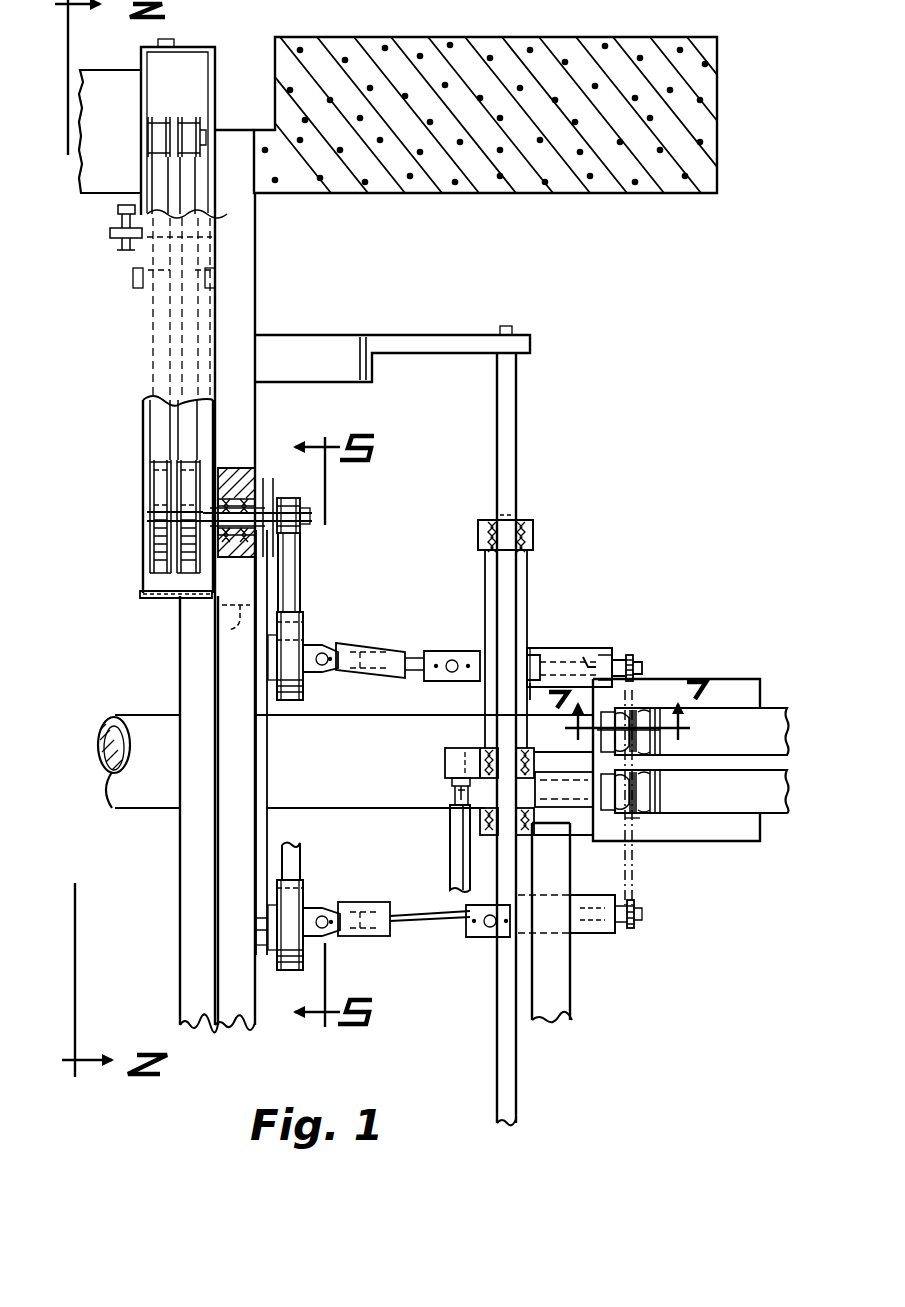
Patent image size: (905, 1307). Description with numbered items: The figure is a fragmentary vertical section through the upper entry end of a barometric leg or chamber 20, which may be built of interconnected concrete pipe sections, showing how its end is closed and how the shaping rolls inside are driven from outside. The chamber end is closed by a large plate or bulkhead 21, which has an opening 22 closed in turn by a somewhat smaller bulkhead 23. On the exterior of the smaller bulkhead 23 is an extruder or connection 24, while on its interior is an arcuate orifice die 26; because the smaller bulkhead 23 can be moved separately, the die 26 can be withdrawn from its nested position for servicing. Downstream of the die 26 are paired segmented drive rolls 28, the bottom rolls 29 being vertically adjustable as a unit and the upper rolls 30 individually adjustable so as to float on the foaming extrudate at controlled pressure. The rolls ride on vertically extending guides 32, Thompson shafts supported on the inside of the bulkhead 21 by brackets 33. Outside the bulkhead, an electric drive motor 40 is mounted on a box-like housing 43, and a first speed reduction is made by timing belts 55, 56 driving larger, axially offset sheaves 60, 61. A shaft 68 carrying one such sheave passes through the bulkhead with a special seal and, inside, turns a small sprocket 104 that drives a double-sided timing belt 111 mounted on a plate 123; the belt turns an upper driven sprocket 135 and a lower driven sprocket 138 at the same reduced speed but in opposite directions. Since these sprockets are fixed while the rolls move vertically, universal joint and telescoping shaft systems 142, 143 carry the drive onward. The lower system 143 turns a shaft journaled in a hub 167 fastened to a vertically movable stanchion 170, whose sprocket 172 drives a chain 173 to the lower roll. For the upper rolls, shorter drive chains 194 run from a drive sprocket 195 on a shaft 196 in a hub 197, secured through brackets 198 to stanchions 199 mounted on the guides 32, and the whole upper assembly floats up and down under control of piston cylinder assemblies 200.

The barometric leg or chamber 20 is at (730, 82).
The bulkhead 21 is at (262, 300).
The opening 22 is at (228, 632).
The smaller bulkhead 23 is at (183, 672).
The extruder connection 24 is at (120, 713).
The die 26 is at (732, 679).
The segmented drive rolls 28 is at (789, 700).
The bottom rolls 29 is at (796, 800).
The upper rolls 30 is at (796, 730).
The vertically extending guides 32 is at (522, 460).
The brackets 33 is at (392, 336).
The electric drive motor 40 is at (107, 92).
The bracket or housing 43 is at (228, 100).
The timing belt 55 is at (157, 180).
The timing belt 56 is at (192, 176).
The sheave or sprocket 60 is at (180, 598).
The sheave or sprocket 61 is at (178, 600).
The shaft 68 is at (245, 470).
The sprocket 104 is at (305, 532).
The double-sided timing belt 111 is at (301, 560).
The plate 123 is at (262, 830).
The upper driven sprocket 135 is at (305, 618).
The lower driven sprocket 138 is at (306, 968).
The universal joint and telescoping shaft system 142 is at (420, 638).
The universal joint and telescoping shaft system 143 is at (432, 925).
The hub 167 is at (597, 936).
The stanchion 170 is at (572, 990).
The sprocket 172 is at (633, 928).
The drive chain 173 is at (632, 875).
The drive chains 194 is at (630, 695).
The drive sprocket 195 is at (633, 660).
The shaft 196 is at (598, 645).
The hub 197 is at (572, 648).
The brackets 198 is at (545, 648).
The stanchions 199 is at (528, 577).
The piston cylinder assemblies 200 is at (448, 838).